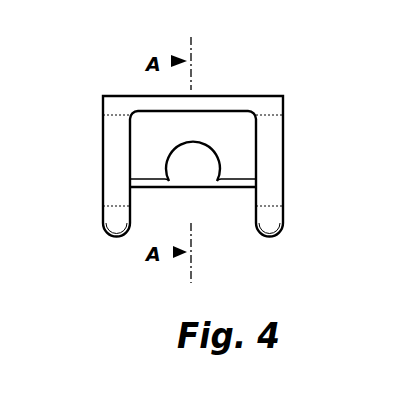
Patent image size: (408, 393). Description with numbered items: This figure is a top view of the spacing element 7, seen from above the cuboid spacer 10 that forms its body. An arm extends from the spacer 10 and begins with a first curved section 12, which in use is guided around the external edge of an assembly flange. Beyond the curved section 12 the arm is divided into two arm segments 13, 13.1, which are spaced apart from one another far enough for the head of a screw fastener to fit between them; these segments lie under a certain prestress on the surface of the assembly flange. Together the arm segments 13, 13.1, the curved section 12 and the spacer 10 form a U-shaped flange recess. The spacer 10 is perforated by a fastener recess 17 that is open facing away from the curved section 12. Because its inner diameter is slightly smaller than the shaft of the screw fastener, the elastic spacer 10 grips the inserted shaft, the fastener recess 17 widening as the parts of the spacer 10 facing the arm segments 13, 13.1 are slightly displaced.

The spacing element 7 is at (105, 77).
The spacer 10 is at (160, 145).
The curved section 12 is at (286, 97).
The arm segment 13 is at (271, 147).
The arm segment 13.1 is at (113, 168).
The fastener recess 17 is at (203, 171).